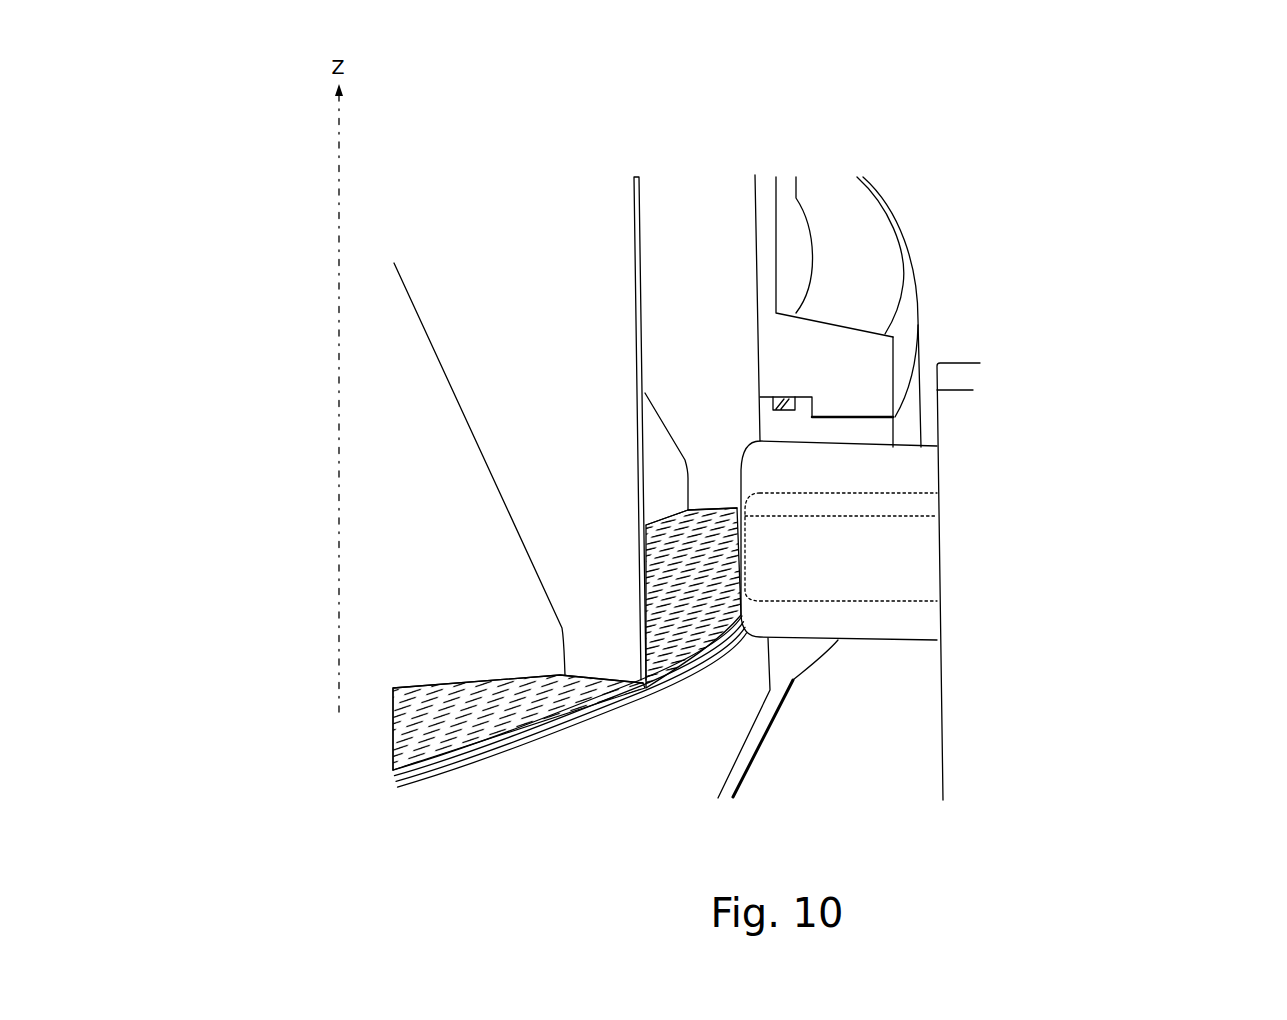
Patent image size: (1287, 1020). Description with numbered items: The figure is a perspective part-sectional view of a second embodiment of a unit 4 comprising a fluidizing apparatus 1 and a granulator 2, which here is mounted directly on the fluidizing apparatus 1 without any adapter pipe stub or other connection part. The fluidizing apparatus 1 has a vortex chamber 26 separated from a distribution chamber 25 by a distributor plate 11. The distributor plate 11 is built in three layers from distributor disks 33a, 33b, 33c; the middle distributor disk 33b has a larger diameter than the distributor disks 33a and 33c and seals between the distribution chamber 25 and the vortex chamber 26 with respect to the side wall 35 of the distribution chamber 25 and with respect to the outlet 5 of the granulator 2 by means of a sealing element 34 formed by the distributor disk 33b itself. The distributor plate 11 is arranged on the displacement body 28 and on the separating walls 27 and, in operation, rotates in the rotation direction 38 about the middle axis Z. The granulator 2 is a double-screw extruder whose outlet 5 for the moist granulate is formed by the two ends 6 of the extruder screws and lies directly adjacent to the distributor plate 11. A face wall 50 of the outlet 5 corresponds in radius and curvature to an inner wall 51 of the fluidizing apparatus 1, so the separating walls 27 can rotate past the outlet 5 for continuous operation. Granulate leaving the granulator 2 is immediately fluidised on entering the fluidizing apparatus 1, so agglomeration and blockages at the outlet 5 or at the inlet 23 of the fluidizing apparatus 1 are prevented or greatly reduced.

The fluidizing apparatus 1 is at (525, 120).
The granulator 2 is at (972, 525).
The unit 4 is at (246, 106).
The outlet 5 is at (721, 577).
The ends of the extruder screws 6 is at (840, 503).
The distributor plate 11 is at (368, 750).
The inlet 23 is at (807, 684).
The distribution chamber 25 is at (579, 781).
The vortex chamber 26 is at (577, 444).
The separating walls 27 is at (578, 200).
The displacement body 28 is at (447, 562).
The distributor disk 33a is at (393, 770).
The distributor disk 33b is at (447, 772).
The distributor disk 33c is at (503, 753).
The sealing element 34 is at (619, 703).
The side wall 35 is at (733, 797).
The rotation direction 38 is at (390, 211).
The face wall 50 is at (735, 468).
The inner wall 51 is at (753, 281).